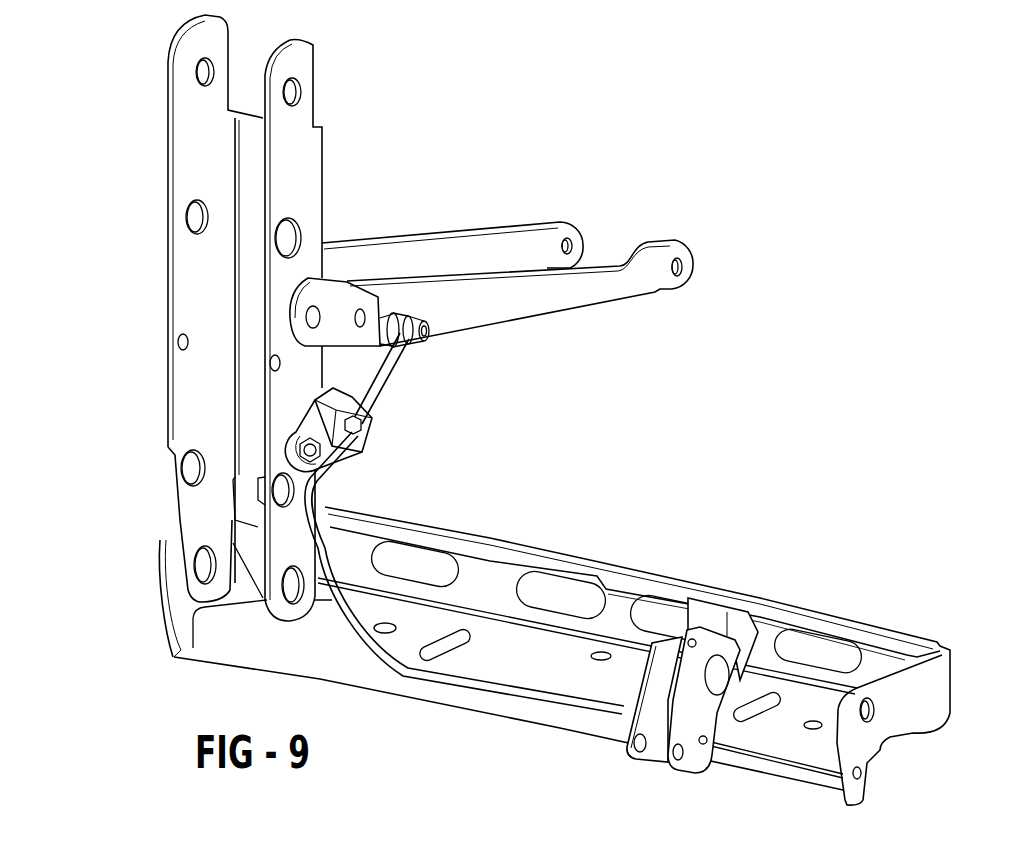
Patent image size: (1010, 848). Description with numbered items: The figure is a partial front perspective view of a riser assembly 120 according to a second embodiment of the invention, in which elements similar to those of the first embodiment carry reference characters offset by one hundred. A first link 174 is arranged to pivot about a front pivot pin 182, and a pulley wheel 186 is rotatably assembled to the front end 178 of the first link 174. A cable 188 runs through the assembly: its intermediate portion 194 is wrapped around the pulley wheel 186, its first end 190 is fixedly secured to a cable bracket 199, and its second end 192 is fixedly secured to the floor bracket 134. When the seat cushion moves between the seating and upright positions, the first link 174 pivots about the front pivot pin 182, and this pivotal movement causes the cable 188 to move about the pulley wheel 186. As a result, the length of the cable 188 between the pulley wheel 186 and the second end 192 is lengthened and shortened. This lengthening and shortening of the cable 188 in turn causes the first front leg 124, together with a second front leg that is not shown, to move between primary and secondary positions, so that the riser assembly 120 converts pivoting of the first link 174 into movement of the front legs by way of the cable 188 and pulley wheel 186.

The riser assembly 120 is at (122, 215).
The first front leg 124 is at (166, 372).
The floor bracket 134 is at (913, 737).
The first link 174 is at (598, 307).
The front end 178 is at (495, 318).
The front pivot pin 182 is at (316, 317).
The pulley wheel 186 is at (430, 345).
The cable 188 is at (385, 388).
The first end 190 is at (375, 432).
The second end 192 is at (780, 760).
The intermediate portion 194 is at (400, 360).
The cable bracket 199 is at (357, 458).